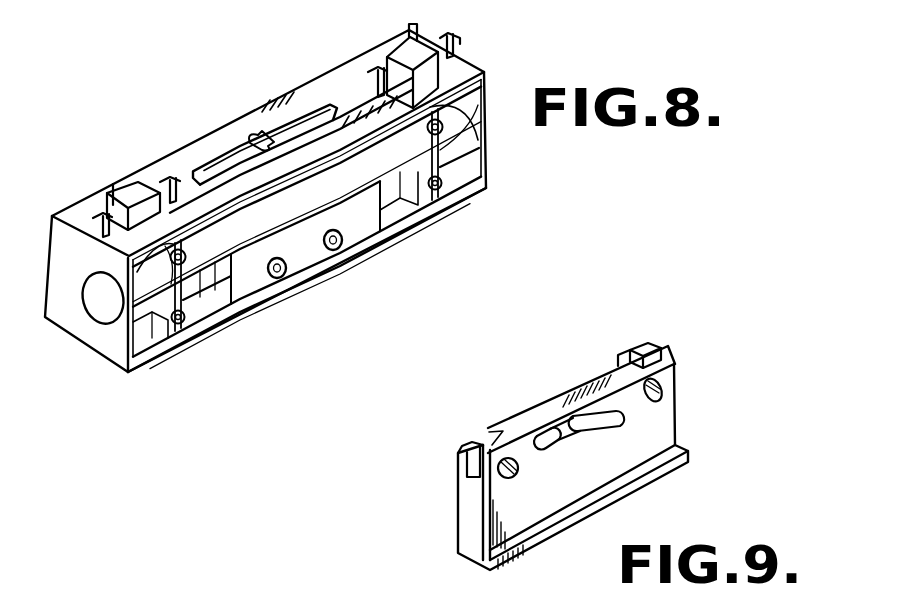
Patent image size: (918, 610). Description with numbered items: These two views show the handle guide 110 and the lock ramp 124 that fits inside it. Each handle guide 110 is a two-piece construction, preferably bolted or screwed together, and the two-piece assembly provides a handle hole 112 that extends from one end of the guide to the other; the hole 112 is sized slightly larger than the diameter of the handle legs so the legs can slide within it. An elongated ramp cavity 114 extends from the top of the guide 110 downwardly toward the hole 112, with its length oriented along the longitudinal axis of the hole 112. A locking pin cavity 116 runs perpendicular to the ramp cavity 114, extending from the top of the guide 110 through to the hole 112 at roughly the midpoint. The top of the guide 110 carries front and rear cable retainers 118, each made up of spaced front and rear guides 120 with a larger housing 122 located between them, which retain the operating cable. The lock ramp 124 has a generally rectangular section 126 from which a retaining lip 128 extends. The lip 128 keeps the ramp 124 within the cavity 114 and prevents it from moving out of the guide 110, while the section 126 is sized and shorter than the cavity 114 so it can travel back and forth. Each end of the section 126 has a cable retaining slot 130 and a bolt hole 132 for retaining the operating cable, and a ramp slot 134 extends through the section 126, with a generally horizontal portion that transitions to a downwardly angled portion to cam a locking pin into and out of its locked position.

In FIG. 8, the handle guide 110 is at (380, 248).
In FIG. 8, the handle hole 112 is at (99, 308).
In FIG. 8, the ramp cavity 114 is at (207, 170).
In FIG. 8, the locking pin cavity 116 is at (252, 141).
In FIG. 8, the cable retainer 118 is at (116, 172).
In FIG. 8, the guide 120 is at (97, 218).
In FIG. 8, the housing 122 is at (112, 200).
In FIG. 9, the lock ramp 124 is at (449, 536).
In FIG. 9, the rectangular section 126 is at (452, 508).
In FIG. 9, the retaining lip 128 is at (489, 562).
In FIG. 9, the cable retaining slot 130 is at (477, 446).
In FIG. 9, the bolt hole 132 is at (508, 478).
In FIG. 9, the ramp slot 134 is at (550, 445).